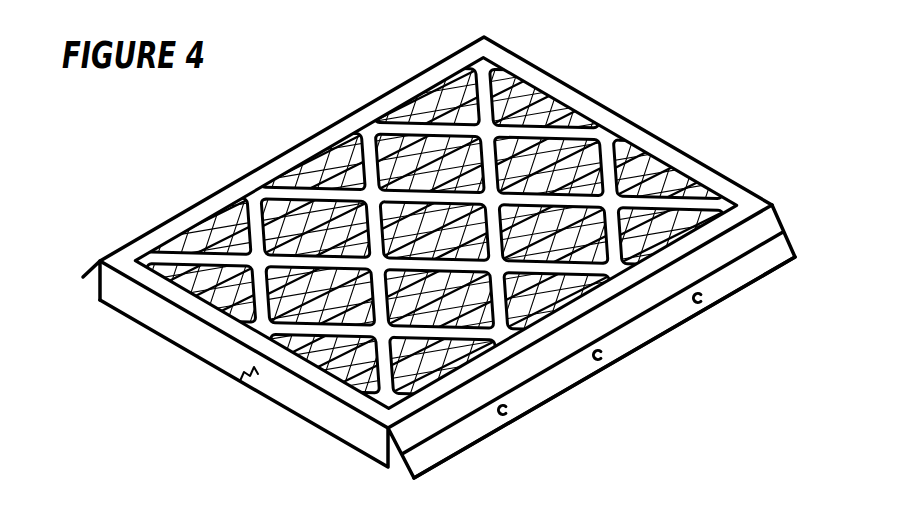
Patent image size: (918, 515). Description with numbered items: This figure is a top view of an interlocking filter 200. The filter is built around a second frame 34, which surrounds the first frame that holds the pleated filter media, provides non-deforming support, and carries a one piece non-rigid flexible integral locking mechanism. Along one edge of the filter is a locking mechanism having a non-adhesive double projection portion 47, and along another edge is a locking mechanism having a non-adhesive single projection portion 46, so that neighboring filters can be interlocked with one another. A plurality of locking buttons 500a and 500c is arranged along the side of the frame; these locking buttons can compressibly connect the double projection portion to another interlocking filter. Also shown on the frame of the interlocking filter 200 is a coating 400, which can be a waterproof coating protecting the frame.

The second frame 34 is at (438, 73).
The interlocking filter 200 is at (652, 89).
The non-adhesive single projection portion 46 is at (92, 270).
The non-adhesive double projection portion 47 is at (577, 384).
The coating 400 is at (243, 380).
The locking button 500a is at (510, 414).
The locking button 500c is at (703, 301).